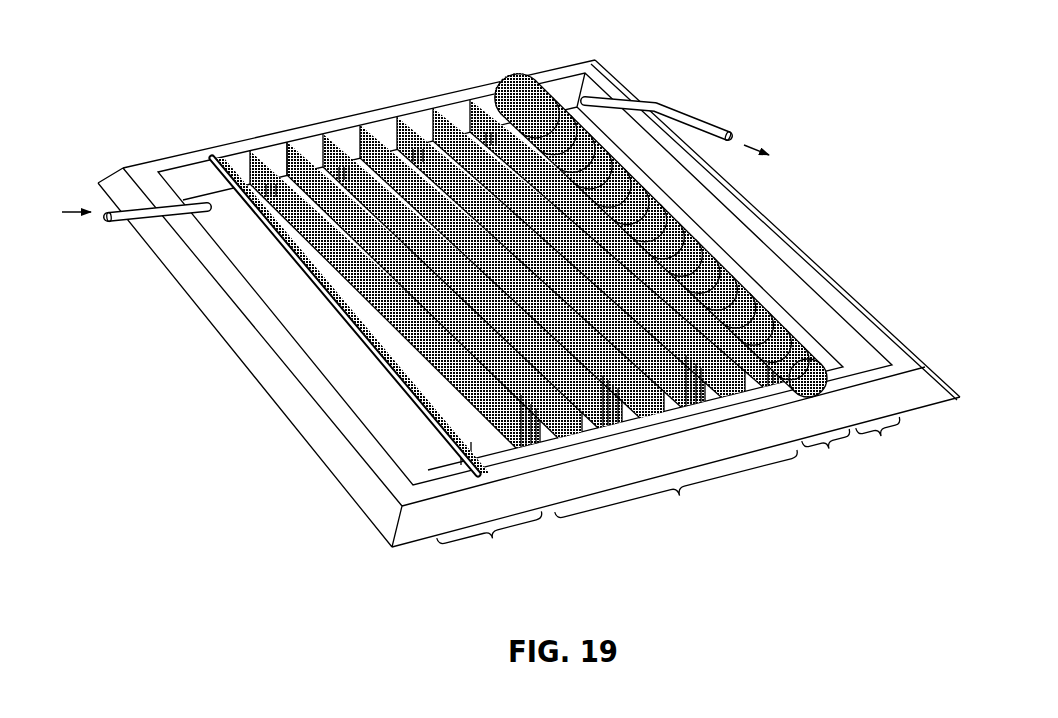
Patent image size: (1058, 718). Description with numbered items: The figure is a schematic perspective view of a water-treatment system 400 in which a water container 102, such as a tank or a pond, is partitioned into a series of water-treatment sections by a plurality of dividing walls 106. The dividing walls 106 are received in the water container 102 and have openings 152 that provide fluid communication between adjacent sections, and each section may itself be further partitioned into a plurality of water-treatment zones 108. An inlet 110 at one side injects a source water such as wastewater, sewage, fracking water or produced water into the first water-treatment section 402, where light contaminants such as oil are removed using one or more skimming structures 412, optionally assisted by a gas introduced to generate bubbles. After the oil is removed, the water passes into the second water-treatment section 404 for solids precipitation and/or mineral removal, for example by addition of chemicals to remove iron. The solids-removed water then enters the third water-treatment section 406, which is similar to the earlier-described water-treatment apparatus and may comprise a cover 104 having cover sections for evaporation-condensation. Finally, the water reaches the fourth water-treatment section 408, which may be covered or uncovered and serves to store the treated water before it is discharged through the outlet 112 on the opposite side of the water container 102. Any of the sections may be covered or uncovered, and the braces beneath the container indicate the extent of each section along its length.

The water-treatment system 400 is at (140, 76).
The water container 102 is at (188, 297).
The cover 104 is at (500, 83).
The dividing wall 106 is at (292, 166).
The water-treatment zones 108 is at (351, 147).
The inlet 110 is at (110, 221).
The outlet 112 is at (666, 107).
The flow openings 152 is at (401, 138).
The skimming structures 412 is at (214, 158).
The first water-treatment section 402 is at (491, 548).
The second water-treatment section 404 is at (678, 490).
The third water-treatment section 406 is at (827, 461).
The fourth water-treatment section 408 is at (884, 447).